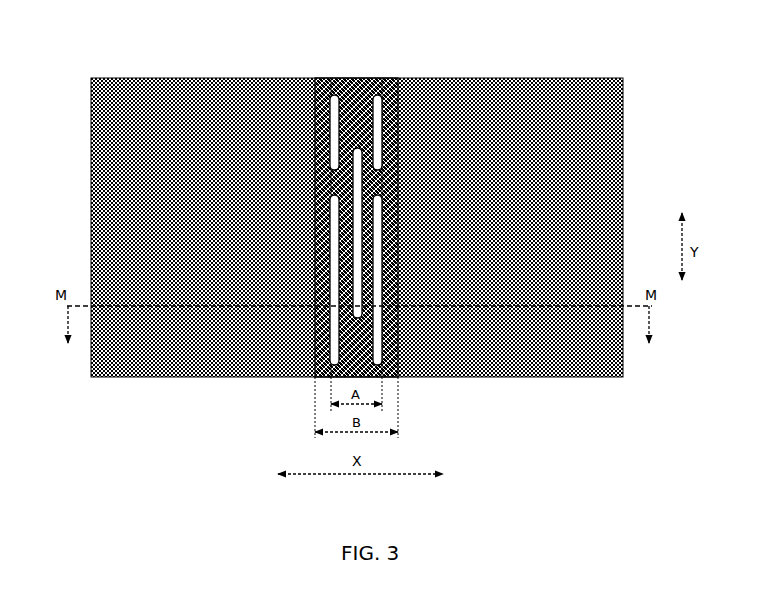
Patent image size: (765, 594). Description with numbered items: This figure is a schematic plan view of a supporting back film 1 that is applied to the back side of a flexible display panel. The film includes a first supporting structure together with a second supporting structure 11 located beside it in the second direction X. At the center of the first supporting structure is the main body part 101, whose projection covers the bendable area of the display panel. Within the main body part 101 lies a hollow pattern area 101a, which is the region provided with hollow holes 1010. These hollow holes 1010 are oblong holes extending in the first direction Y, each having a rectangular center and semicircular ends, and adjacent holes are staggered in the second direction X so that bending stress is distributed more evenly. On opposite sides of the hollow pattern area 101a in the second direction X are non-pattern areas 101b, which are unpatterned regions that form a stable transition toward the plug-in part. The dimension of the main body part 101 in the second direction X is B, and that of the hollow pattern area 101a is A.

The supporting back film 1 is at (330, 197).
The second supporting structure 11 is at (91, 235).
The main body part 101 is at (395, 46).
The hollow pattern area 101a is at (362, 96).
The non-pattern areas 101b is at (319, 92).
The hollow holes 1010 is at (337, 116).